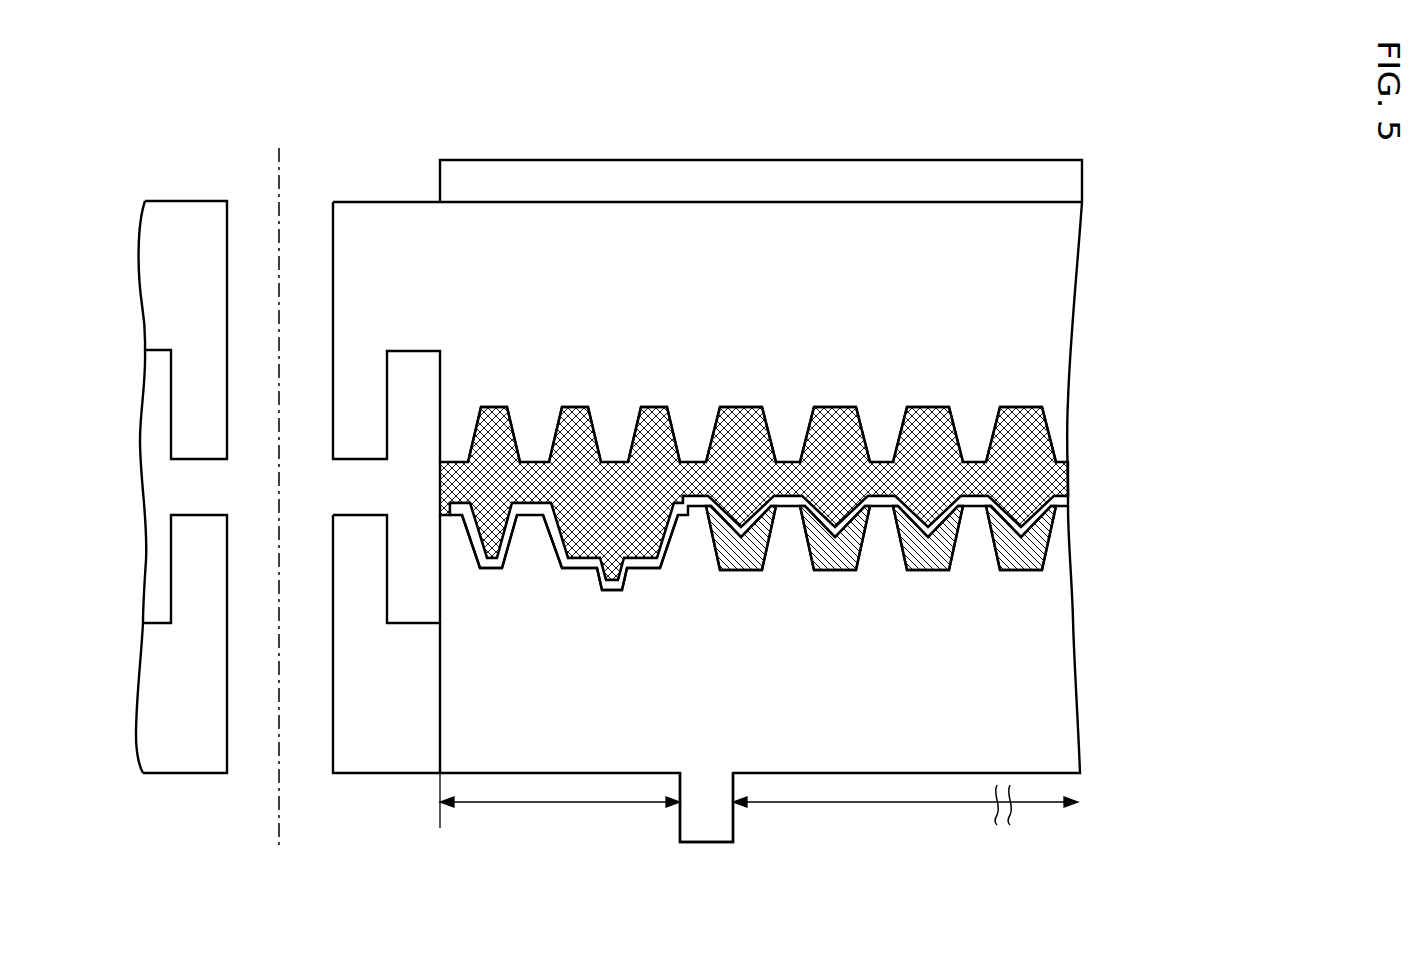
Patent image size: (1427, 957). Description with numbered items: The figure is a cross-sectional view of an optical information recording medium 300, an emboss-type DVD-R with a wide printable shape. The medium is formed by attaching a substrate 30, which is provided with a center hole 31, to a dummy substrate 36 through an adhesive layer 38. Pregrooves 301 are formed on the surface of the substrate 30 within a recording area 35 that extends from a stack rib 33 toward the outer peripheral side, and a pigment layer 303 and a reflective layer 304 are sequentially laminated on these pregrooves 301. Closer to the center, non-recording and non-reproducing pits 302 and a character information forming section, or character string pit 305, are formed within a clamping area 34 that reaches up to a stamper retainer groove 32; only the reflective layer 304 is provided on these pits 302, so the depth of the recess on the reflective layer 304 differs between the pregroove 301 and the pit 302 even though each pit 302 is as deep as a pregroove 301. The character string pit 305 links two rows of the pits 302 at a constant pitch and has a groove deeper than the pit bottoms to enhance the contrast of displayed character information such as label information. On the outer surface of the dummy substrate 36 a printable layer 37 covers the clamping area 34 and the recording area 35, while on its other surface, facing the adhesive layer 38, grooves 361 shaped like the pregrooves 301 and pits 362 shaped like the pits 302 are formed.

The optical information recording medium 300 is at (803, 103).
The printable layer 37 is at (1073, 184).
The dummy substrate 36 is at (1052, 295).
The adhesive layer 38 is at (1068, 445).
The reflective layer 304 is at (1068, 490).
The pigment layer 303 is at (1013, 570).
The pregroove 301 is at (1043, 570).
The substrate 30 is at (1070, 724).
The pit 362 is at (576, 406).
The groove 361 is at (930, 406).
The character information forming section (character string pit) 305 is at (610, 590).
The non-recording and non-reproducing pit 302 is at (492, 570).
The stamper retainer groove 32 is at (440, 607).
The stack rib 33 is at (707, 842).
The clamping area 34 is at (468, 802).
The recording area 35 is at (870, 802).
The center hole 31 is at (240, 758).